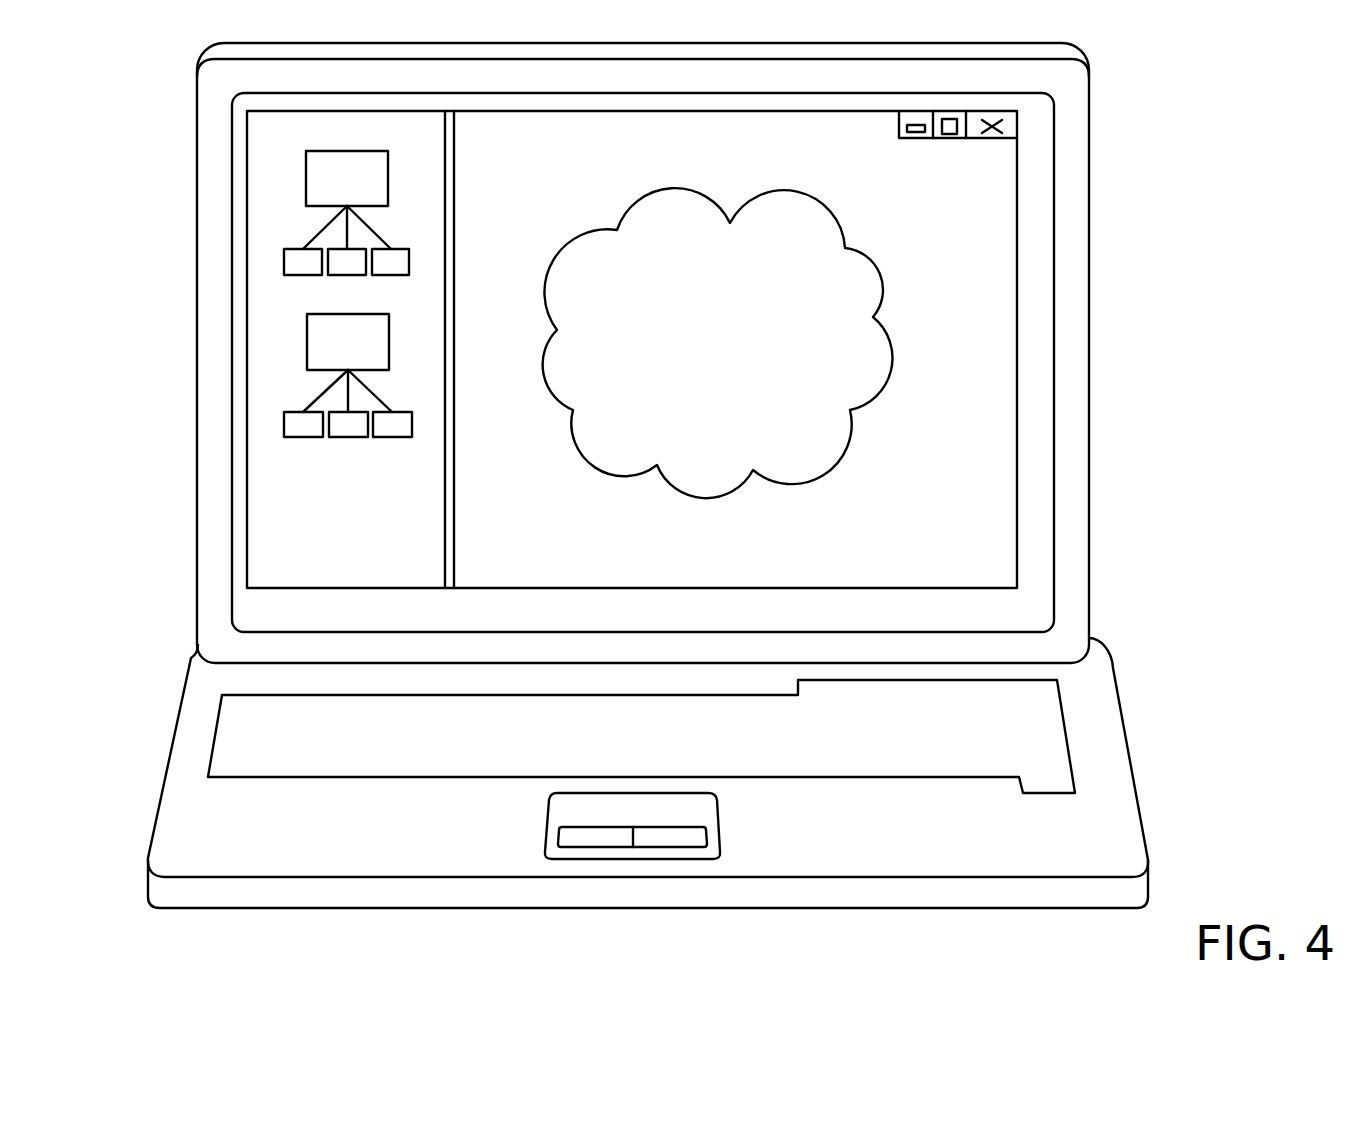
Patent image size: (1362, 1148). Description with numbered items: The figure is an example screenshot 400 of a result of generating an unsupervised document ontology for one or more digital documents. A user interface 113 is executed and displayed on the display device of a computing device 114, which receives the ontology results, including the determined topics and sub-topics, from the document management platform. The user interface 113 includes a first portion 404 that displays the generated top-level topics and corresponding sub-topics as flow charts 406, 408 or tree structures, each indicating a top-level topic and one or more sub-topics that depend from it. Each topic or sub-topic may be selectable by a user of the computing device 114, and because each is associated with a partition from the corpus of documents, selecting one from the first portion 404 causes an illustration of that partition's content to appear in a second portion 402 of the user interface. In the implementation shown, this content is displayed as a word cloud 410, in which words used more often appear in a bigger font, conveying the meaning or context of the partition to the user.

The screenshot 400 is at (694, 475).
The user interface 113 is at (651, 353).
The computing device 114 is at (1127, 735).
The second portion 402 is at (870, 343).
The first portion 404 is at (280, 349).
The flow chart 406 is at (306, 190).
The flow chart 408 is at (307, 353).
The word cloud 410 is at (696, 371).